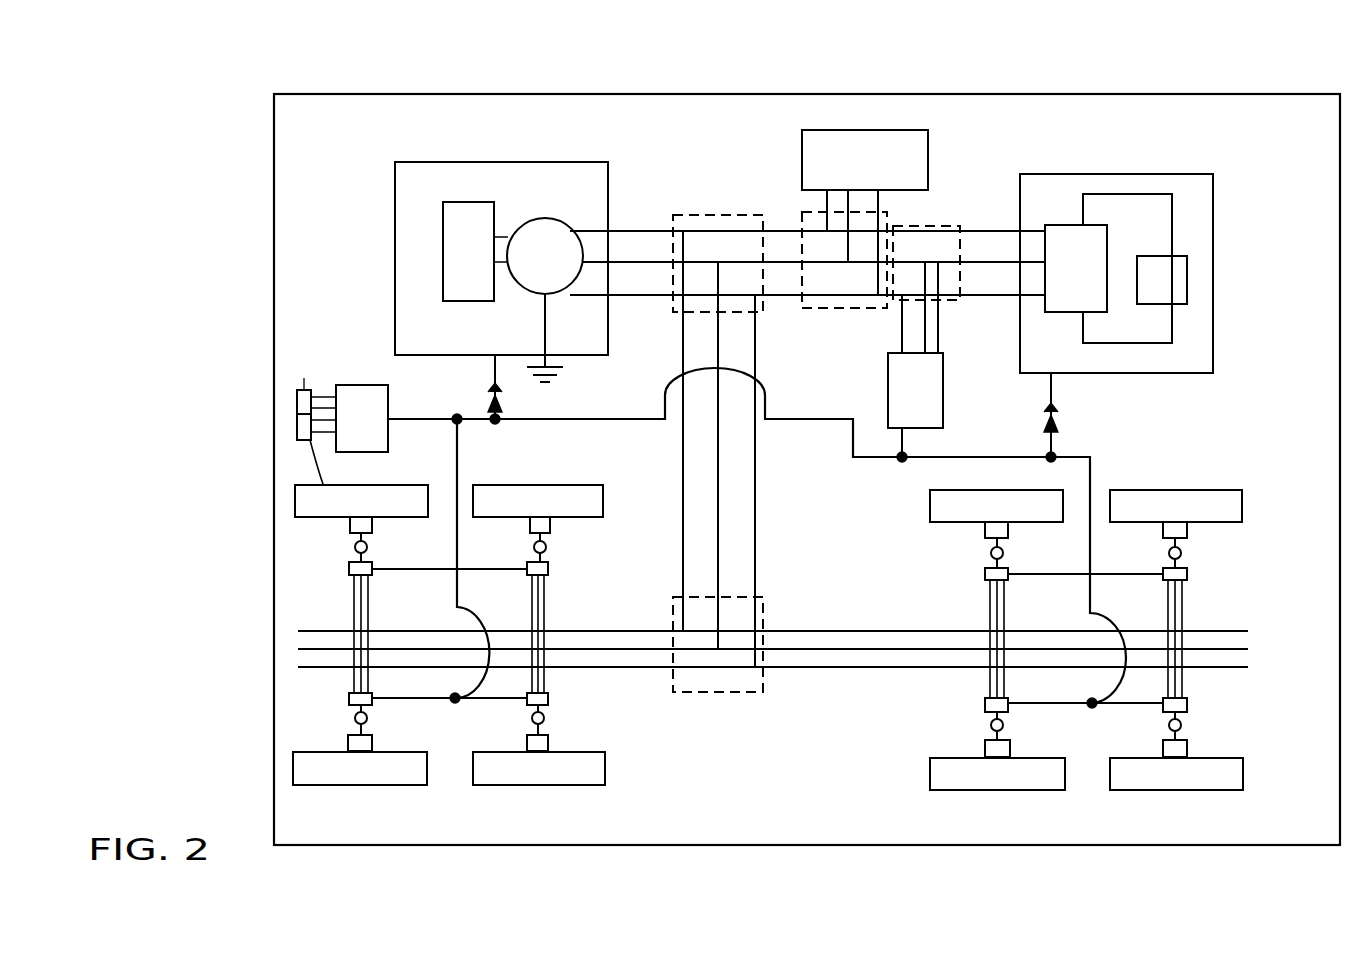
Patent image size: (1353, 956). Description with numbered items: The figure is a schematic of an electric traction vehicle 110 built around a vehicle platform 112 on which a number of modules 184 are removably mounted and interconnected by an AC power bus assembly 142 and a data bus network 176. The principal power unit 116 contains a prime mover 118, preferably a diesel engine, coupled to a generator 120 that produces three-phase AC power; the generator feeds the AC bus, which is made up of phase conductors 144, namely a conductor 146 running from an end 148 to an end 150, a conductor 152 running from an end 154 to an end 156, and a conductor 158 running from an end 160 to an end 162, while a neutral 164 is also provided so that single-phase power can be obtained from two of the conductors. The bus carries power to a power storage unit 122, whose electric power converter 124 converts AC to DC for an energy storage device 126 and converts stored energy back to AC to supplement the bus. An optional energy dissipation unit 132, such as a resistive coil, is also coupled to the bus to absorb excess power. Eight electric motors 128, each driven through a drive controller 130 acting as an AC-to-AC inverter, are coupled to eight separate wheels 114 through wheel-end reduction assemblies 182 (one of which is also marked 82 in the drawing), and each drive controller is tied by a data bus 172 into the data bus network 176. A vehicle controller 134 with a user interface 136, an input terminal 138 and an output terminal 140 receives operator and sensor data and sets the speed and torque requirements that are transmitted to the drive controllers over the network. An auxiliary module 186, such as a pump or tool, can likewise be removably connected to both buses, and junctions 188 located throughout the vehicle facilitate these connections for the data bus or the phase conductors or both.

The cable 82 is at (366, 517).
The electric traction vehicle 110 is at (165, 95).
The vehicle platform 112 is at (553, 94).
The wheel 114 is at (298, 520).
The principal power unit 116 is at (430, 162).
The prime mover 118 is at (443, 272).
The generator 120 is at (520, 226).
The power storage unit 122 is at (1140, 174).
The electric power converter 124 is at (1056, 225).
The energy storage device 126 is at (1158, 256).
The electric motor 128 is at (368, 547).
The drive controller 130 is at (349, 568).
The energy dissipation unit 132 is at (802, 138).
The vehicle controller 134 is at (350, 386).
The user interface 136 is at (266, 421).
The input terminal 138 is at (310, 398).
The output terminal 140 is at (334, 463).
The AC power bus assembly 142 is at (827, 628).
The phase conductors 144 is at (766, 505).
The conductor 146 is at (651, 229).
The end 148 is at (583, 222).
The end 150 is at (1016, 224).
The conductor 152 is at (633, 258).
The end 154 is at (588, 262).
The end 156 is at (1040, 262).
The conductor 158 is at (629, 296).
The end 160 is at (576, 297).
The end 162 is at (1040, 307).
The neutral 164 is at (546, 328).
The data bus 172 is at (581, 425).
The data bus network 176 is at (478, 437).
The wheel-end reduction assembly 182 is at (530, 525).
The modules 184 is at (356, 206).
The auxiliary module 186 is at (943, 430).
The junction 188 is at (735, 201).